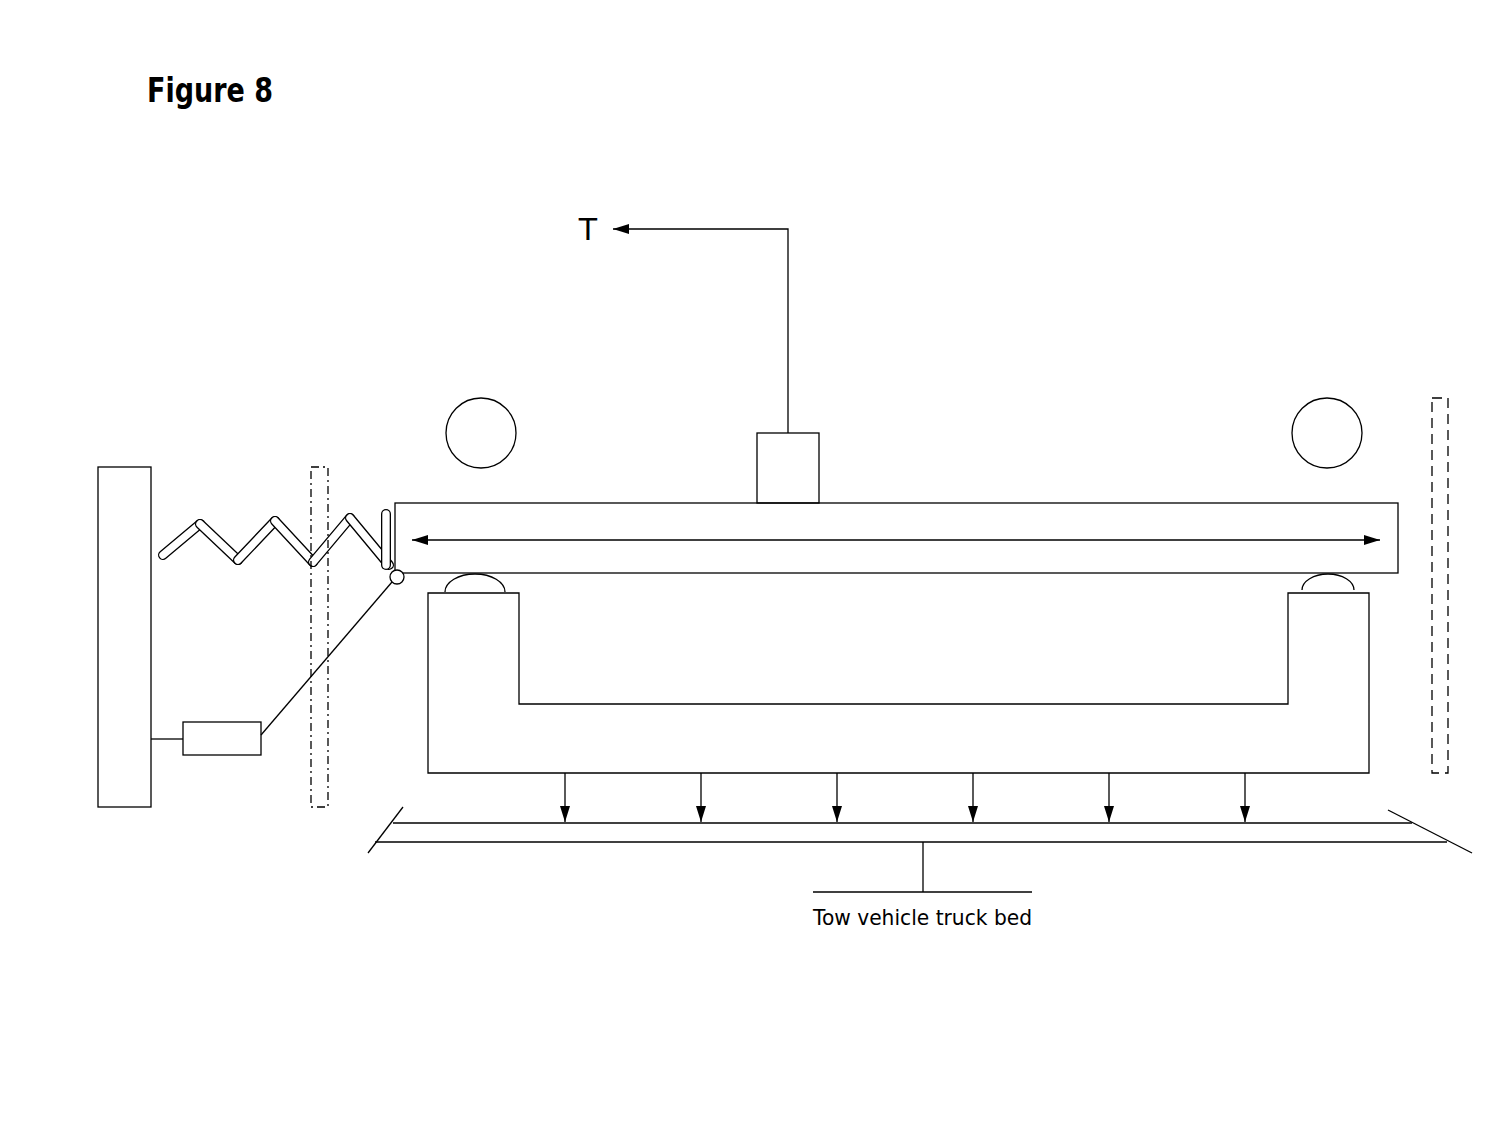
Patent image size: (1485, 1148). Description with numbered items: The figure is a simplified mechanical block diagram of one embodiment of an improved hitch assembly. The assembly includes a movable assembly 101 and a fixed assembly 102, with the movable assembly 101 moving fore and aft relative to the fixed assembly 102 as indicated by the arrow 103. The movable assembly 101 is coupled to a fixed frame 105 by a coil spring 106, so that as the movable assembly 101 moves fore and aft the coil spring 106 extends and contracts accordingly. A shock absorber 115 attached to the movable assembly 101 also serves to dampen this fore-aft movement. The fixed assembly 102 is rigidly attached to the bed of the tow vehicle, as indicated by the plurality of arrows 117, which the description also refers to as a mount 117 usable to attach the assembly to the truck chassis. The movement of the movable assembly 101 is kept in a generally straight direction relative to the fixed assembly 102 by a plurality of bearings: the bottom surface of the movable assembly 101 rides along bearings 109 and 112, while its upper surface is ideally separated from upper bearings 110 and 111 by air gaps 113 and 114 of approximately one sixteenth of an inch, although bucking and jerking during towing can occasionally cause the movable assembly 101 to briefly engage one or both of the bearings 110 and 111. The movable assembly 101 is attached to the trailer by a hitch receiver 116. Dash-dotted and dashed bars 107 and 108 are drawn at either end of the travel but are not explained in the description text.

The movable assembly 101 is at (940, 517).
The fixed assembly 102 is at (703, 718).
The arrow 103 is at (1023, 530).
The fixed frame 105 is at (125, 473).
The coil spring 106 is at (200, 520).
The front position limit 107 is at (320, 462).
The rear position limit 108 is at (1435, 413).
The bearing 109 is at (531, 615).
The bearing 110 is at (513, 402).
The bearing 111 is at (1285, 407).
The bearing 112 is at (1259, 595).
The air gap 113 is at (492, 483).
The air gap 114 is at (1315, 480).
The shock absorber 115 is at (210, 740).
The hitch receiver 116 is at (827, 445).
The arrows 117 is at (1253, 793).